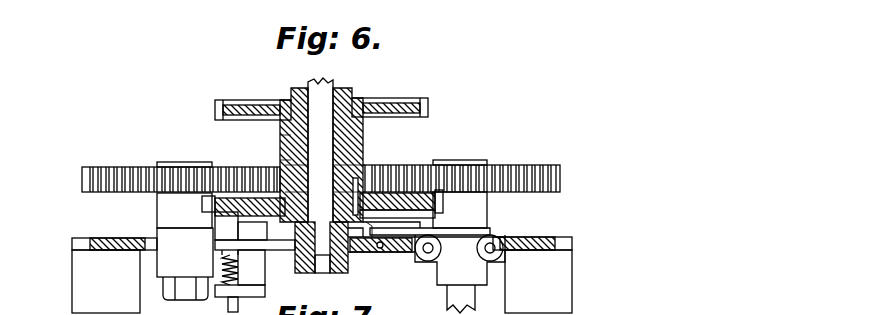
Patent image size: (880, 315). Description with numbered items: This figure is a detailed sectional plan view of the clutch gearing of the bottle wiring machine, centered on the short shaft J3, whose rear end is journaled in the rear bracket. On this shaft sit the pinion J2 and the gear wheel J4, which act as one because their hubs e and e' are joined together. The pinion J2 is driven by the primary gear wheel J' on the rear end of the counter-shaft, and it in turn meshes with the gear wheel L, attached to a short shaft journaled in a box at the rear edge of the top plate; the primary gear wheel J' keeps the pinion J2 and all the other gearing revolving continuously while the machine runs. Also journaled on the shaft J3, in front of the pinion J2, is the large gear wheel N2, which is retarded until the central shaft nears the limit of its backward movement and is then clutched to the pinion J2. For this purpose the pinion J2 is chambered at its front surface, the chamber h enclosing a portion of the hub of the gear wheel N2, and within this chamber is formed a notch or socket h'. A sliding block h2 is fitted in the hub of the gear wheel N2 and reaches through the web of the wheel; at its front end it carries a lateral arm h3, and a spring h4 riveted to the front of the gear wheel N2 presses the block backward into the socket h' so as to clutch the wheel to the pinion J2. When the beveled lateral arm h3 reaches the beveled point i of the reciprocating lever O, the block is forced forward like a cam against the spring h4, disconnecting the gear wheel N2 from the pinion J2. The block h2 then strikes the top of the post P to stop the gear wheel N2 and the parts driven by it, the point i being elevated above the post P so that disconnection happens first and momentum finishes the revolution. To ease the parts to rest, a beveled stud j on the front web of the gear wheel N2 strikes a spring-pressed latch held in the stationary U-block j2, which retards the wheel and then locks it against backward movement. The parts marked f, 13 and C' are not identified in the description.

The short shaft J3 is at (328, 80).
The gear wheel J4 is at (399, 105).
The pinion J2 is at (363, 170).
The gear wheel J' is at (471, 188).
The gear wheel L is at (120, 167).
The chamber h is at (253, 133).
The hub e' is at (273, 139).
The hub e is at (269, 156).
The notch or socket h' is at (321, 180).
The sliding block h2 is at (324, 178).
The spring h4 is at (324, 203).
The gear wheel N2 is at (425, 212).
The beveled stud j is at (200, 216).
The block f is at (185, 264).
The beveled point i is at (400, 240).
The U-block j2 is at (265, 292).
The stem 13 is at (218, 292).
The bracket C' is at (322, 263).
The reciprocating lever O is at (426, 274).
The lateral arm h3 is at (352, 252).
The post P is at (378, 252).